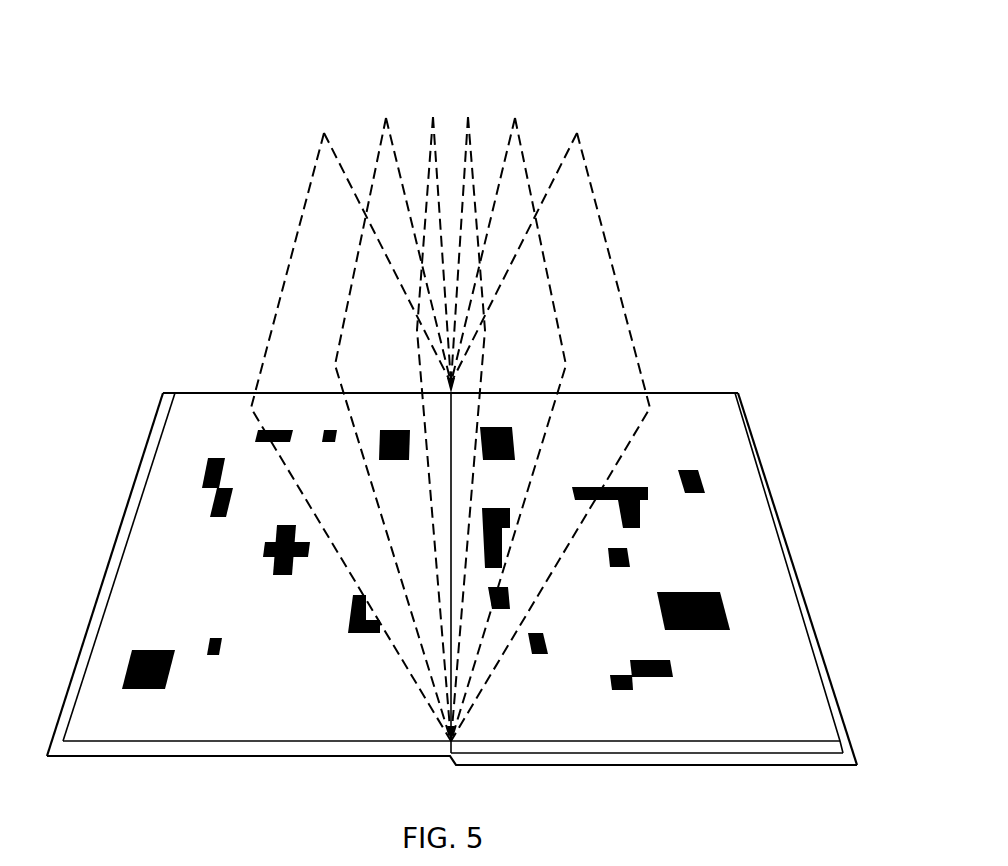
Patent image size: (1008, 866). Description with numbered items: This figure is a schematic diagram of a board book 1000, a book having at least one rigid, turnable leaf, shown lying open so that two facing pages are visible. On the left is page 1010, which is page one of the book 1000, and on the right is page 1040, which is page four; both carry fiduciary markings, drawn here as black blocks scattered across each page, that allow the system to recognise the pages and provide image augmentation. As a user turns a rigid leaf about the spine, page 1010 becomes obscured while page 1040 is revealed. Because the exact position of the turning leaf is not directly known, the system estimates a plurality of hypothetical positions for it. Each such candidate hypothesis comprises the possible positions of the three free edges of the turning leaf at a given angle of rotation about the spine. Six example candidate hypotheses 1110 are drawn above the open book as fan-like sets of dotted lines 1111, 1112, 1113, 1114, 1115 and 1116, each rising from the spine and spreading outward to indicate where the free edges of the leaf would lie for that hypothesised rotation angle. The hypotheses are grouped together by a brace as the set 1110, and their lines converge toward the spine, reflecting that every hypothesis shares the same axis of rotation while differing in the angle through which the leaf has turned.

The book 1000 is at (840, 765).
The page 1010 is at (161, 551).
The page 1040 is at (740, 550).
The candidate hypotheses 1110 is at (485, 378).
The dotted lines 1111 is at (586, 165).
The dotted lines 1112 is at (521, 138).
The dotted lines 1113 is at (470, 128).
The dotted lines 1114 is at (430, 128).
The dotted lines 1115 is at (378, 138).
The dotted lines 1116 is at (317, 165).